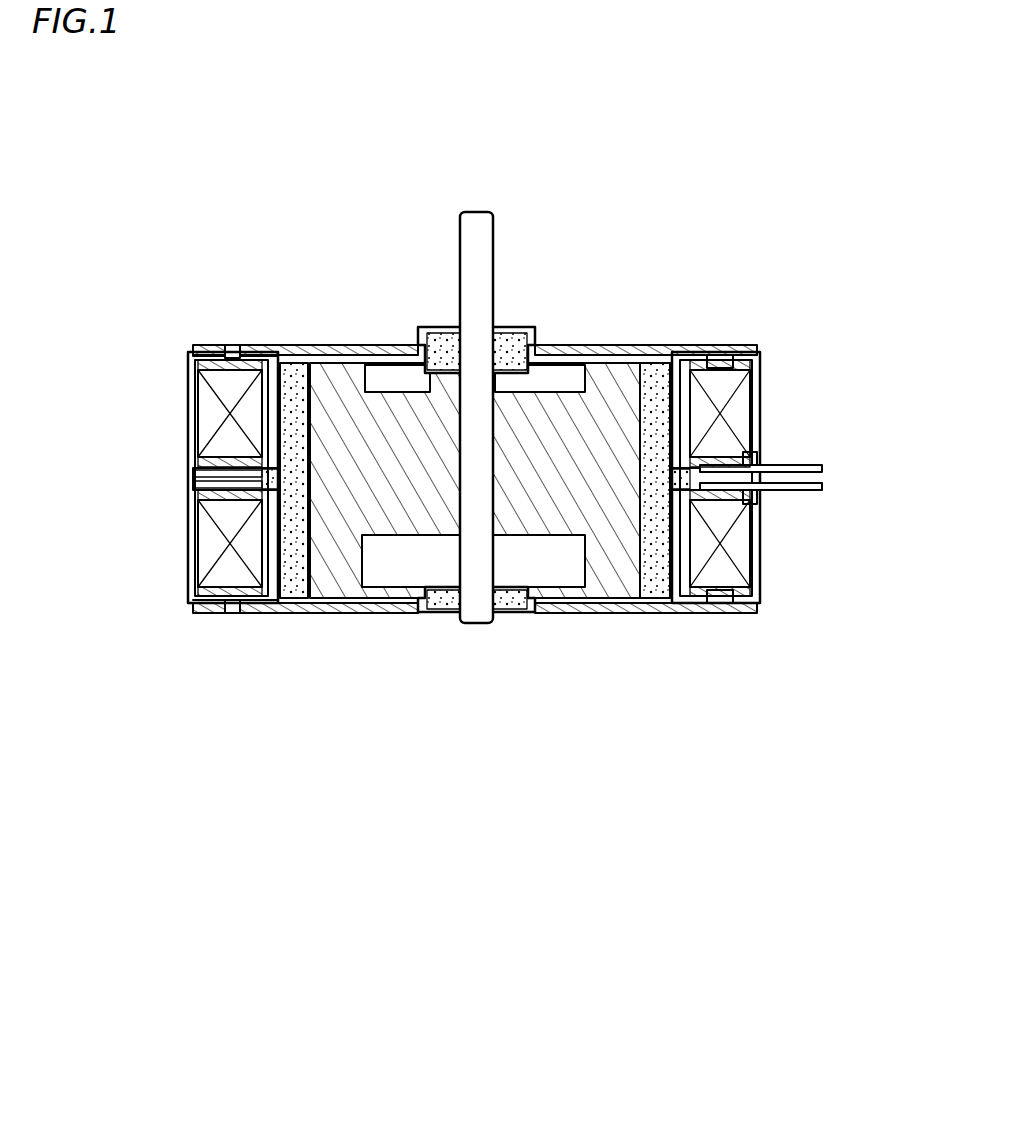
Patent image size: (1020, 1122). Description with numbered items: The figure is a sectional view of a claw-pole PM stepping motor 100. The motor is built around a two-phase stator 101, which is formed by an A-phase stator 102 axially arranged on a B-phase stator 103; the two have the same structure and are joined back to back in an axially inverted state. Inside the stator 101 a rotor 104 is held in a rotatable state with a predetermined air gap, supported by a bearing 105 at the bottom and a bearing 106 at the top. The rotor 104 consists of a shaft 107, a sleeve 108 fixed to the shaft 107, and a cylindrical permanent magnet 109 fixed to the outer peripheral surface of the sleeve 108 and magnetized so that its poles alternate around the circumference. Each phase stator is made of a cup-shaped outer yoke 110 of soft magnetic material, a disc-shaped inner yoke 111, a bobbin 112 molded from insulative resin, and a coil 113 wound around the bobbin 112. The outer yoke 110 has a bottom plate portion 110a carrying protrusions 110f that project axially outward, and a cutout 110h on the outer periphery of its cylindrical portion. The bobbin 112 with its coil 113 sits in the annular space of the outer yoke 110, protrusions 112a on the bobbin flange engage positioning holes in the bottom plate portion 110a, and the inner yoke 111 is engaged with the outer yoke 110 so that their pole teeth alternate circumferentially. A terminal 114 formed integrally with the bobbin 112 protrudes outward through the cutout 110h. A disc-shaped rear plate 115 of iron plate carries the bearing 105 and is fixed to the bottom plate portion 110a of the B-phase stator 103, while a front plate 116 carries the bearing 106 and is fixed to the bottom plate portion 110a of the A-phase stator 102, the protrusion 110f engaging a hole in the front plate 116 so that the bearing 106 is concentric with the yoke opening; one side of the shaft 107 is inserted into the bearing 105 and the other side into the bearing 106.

The PM stepping motor 100 is at (691, 155).
The stator 101 is at (137, 868).
The A-phase stator 102 is at (184, 382).
The B-phase stator 103 is at (182, 568).
The rotor 104 is at (367, 833).
The bearing 105 is at (512, 608).
The bearing 106 is at (505, 345).
The shaft 107 is at (478, 625).
The sleeve 108 is at (605, 560).
The permanent magnet 109 is at (655, 580).
The outer yoke 110 is at (188, 418).
The bottom plate portion 110a is at (247, 362).
The protrusion 110f is at (232, 345).
The cutout 110h is at (757, 455).
The inner yoke 111 is at (188, 475).
The bobbin 112 is at (743, 410).
The protrusion 112a is at (718, 360).
The coil 113 is at (745, 420).
The terminal 114 is at (822, 468).
The rear plate 115 is at (372, 612).
The front plate 116 is at (330, 355).